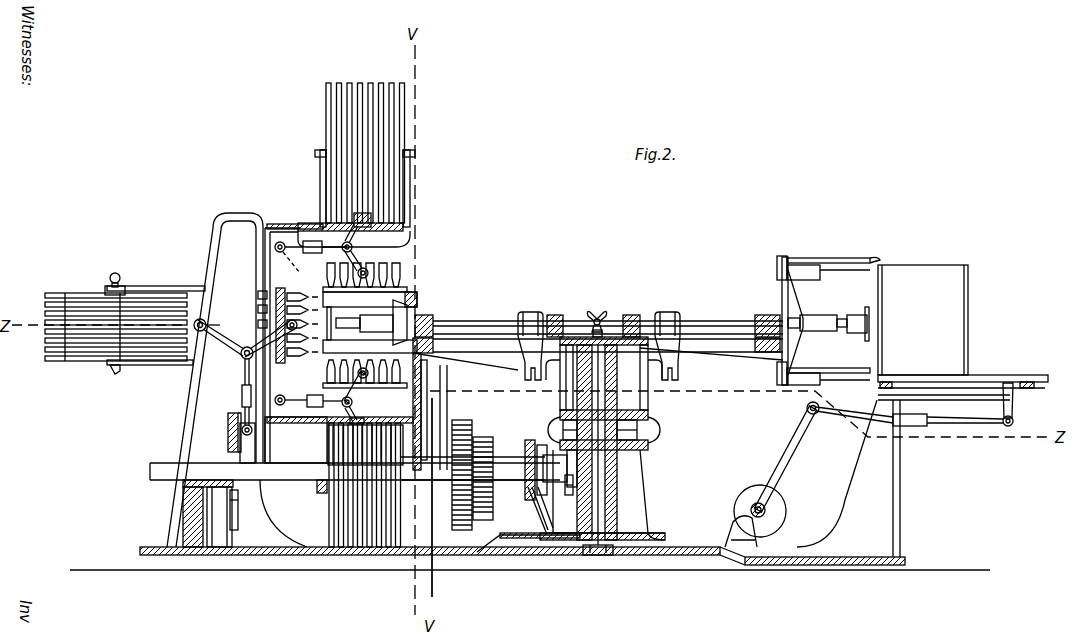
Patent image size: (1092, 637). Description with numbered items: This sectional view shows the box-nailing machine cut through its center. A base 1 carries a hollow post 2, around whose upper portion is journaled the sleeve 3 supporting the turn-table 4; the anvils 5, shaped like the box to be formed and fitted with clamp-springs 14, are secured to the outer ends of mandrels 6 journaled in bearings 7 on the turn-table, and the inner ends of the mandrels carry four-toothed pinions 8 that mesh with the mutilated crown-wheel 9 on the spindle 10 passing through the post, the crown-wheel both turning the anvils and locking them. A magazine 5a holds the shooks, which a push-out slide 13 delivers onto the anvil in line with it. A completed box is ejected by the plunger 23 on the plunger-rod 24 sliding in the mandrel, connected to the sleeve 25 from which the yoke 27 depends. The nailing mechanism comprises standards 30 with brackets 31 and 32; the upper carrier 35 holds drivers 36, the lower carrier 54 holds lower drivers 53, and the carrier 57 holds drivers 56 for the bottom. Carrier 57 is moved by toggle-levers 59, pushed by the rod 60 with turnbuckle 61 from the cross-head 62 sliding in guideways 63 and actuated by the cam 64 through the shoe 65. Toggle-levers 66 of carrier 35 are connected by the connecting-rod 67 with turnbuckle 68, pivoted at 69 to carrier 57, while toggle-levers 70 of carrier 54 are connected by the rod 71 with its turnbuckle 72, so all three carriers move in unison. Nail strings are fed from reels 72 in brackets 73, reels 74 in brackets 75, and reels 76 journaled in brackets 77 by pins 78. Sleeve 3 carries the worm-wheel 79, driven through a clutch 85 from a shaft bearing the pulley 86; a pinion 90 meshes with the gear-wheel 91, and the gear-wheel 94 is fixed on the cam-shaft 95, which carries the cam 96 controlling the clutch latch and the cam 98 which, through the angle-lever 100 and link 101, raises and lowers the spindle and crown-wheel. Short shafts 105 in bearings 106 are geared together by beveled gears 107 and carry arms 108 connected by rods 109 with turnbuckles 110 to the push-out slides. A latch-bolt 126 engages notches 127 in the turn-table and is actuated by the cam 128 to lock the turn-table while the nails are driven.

The base 1 is at (375, 563).
The hollow post 2 is at (616, 477).
The sleeve 3 is at (605, 381).
The turn-table 4 is at (768, 361).
The anvils 5 is at (420, 289).
The magazine 5a is at (969, 323).
The mandrels 6 is at (490, 320).
The bearings 7 is at (433, 316).
The four-toothed pinions 8 is at (598, 312).
The crown-wheel 9 is at (575, 353).
The spindle 10 is at (600, 386).
The push-out slide 13 is at (1043, 384).
The clamp-springs 14 is at (830, 266).
The plunger 23 is at (333, 321).
The plunger-rod 24 is at (844, 328).
The sleeve 25 is at (528, 312).
The yoke 27 is at (524, 376).
The standards 30 is at (222, 227).
The bracket 31 is at (279, 226).
The bracket 32 is at (312, 424).
The carrier 35 is at (404, 243).
The drivers 36 is at (402, 279).
The lower drivers 53 is at (333, 376).
The carrier 54 is at (375, 402).
The drivers 56 is at (300, 358).
The carrier 57 is at (285, 284).
The toggle-levers 59 is at (242, 358).
The rod 60 is at (244, 377).
The turnbuckle 61 is at (241, 399).
The cross-head 62 is at (246, 463).
The guideways 63 is at (254, 438).
The cam 64 is at (239, 524).
The shoe 65 is at (228, 436).
The toggle-levers 66 is at (409, 231).
The connecting-rod 67 is at (300, 243).
The turnbuckle 68 is at (312, 253).
The pivot 69 is at (275, 246).
The toggle-levers 70 is at (330, 435).
The rod 71 is at (282, 405).
The reel 72 is at (406, 127).
The brackets 73 is at (320, 166).
The reels 74 is at (330, 520).
The brackets 75 is at (319, 492).
The reels 76 is at (94, 361).
The brackets 77 is at (167, 281).
The pins 78 is at (117, 273).
The worm-wheel 79 is at (652, 431).
The clutch 85 is at (537, 442).
The pulley 86 is at (447, 397).
The pinion 90 is at (452, 433).
The gear-wheel 91 is at (453, 512).
The gear-wheel 94 is at (492, 430).
The cam-shaft 95 is at (292, 472).
The cam 96 is at (542, 510).
The cam 98 is at (650, 454).
The collar 100 is at (566, 491).
The link 101 is at (583, 546).
The short shafts 105 is at (767, 514).
The bearings 106 is at (733, 521).
The beveled gears 107 is at (785, 504).
The arms 108 is at (790, 461).
The rod 109 is at (957, 426).
The turnbuckle 110 is at (910, 427).
The latch-bolt 126 is at (428, 368).
The notches 127 is at (437, 343).
The cam 128 is at (431, 522).